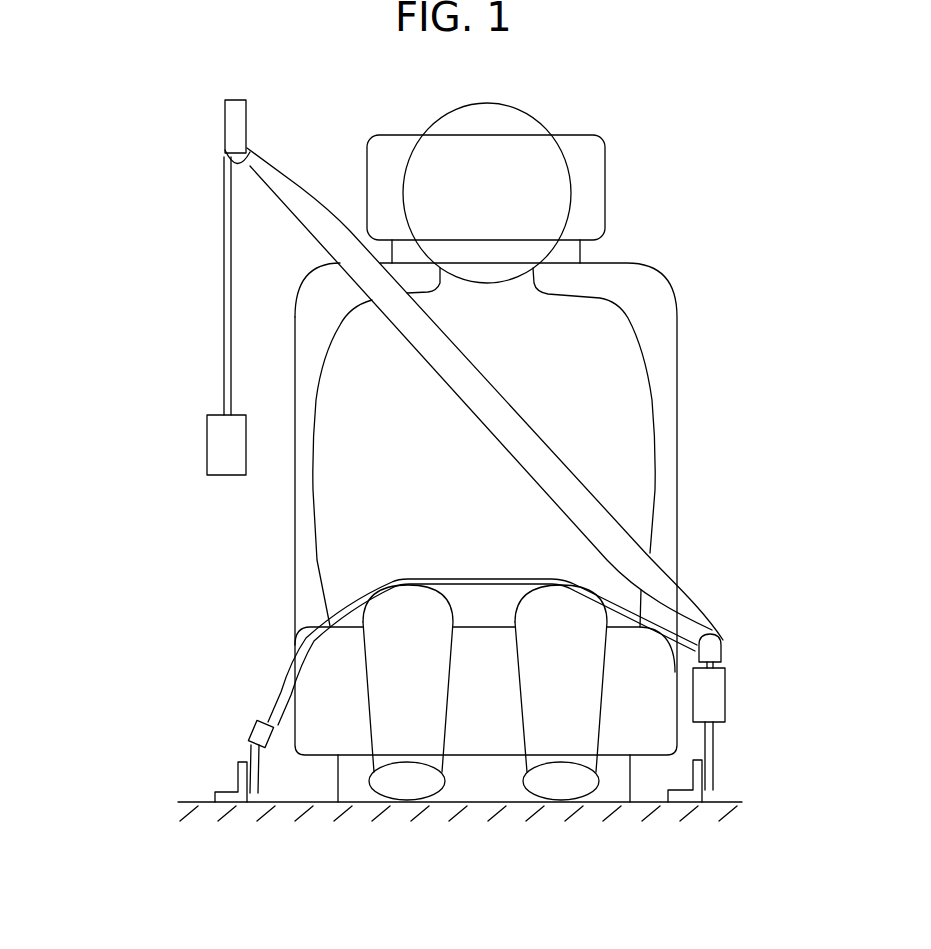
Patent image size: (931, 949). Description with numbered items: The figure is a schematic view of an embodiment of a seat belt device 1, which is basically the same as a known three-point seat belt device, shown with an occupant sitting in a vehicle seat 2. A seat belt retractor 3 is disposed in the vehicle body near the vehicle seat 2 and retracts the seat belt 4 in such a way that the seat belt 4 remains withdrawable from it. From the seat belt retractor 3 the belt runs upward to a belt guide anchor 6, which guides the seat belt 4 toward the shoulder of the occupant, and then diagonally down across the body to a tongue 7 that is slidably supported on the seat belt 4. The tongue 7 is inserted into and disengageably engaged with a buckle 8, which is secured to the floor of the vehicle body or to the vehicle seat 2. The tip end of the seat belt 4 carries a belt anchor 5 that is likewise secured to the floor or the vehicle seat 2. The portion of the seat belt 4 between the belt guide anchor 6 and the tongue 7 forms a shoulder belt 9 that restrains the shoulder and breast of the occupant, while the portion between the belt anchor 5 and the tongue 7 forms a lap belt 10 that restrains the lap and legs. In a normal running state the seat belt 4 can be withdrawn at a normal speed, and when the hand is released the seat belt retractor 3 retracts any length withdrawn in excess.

The seat belt device 1 is at (433, 451).
The vehicle seat 2 is at (312, 671).
The seat belt retractor 3 is at (215, 458).
The seat belt 4 is at (485, 436).
The belt anchor 5 is at (250, 747).
The belt guide anchor 6 is at (231, 118).
The tongue 7 is at (722, 640).
The buckle 8 is at (713, 693).
The shoulder belt 9 is at (540, 457).
The lap belt 10 is at (472, 577).